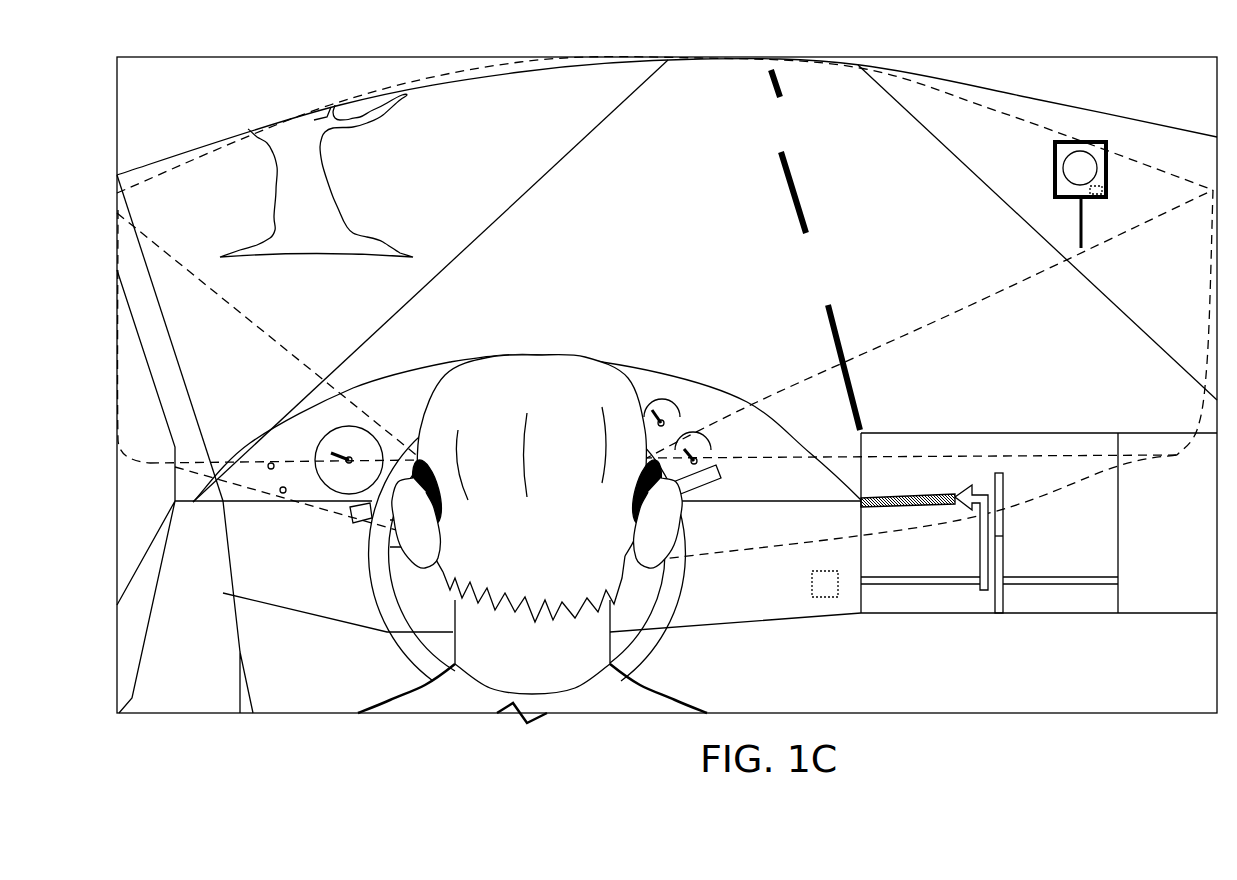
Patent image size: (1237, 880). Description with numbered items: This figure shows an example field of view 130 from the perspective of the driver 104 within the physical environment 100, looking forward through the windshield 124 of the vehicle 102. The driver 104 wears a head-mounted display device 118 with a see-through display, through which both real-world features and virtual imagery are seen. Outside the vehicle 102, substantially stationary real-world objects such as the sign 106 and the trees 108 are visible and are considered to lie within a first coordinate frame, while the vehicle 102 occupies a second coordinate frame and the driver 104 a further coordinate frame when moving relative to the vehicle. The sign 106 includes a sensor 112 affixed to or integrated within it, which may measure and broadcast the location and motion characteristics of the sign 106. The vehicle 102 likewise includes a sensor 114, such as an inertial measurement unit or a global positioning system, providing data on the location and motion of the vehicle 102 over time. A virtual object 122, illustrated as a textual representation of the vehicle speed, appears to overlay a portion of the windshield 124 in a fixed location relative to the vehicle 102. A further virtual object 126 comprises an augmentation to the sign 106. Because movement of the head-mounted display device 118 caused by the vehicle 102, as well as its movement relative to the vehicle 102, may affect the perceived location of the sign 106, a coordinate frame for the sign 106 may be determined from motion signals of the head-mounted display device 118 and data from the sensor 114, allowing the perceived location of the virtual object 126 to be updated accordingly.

The physical environment 100 is at (465, 142).
The vehicle 102 is at (947, 57).
The driver 104 is at (552, 669).
The sign 106 is at (1076, 142).
The trees 108 is at (313, 186).
The sensor 112 is at (1103, 193).
The sensor 114 is at (812, 585).
The head-mounted display device 118 is at (684, 577).
The virtual object 122 is at (997, 362).
The windshield 124 is at (1094, 103).
The virtual object 126 is at (1040, 167).
The field of view 130 is at (1137, 470).